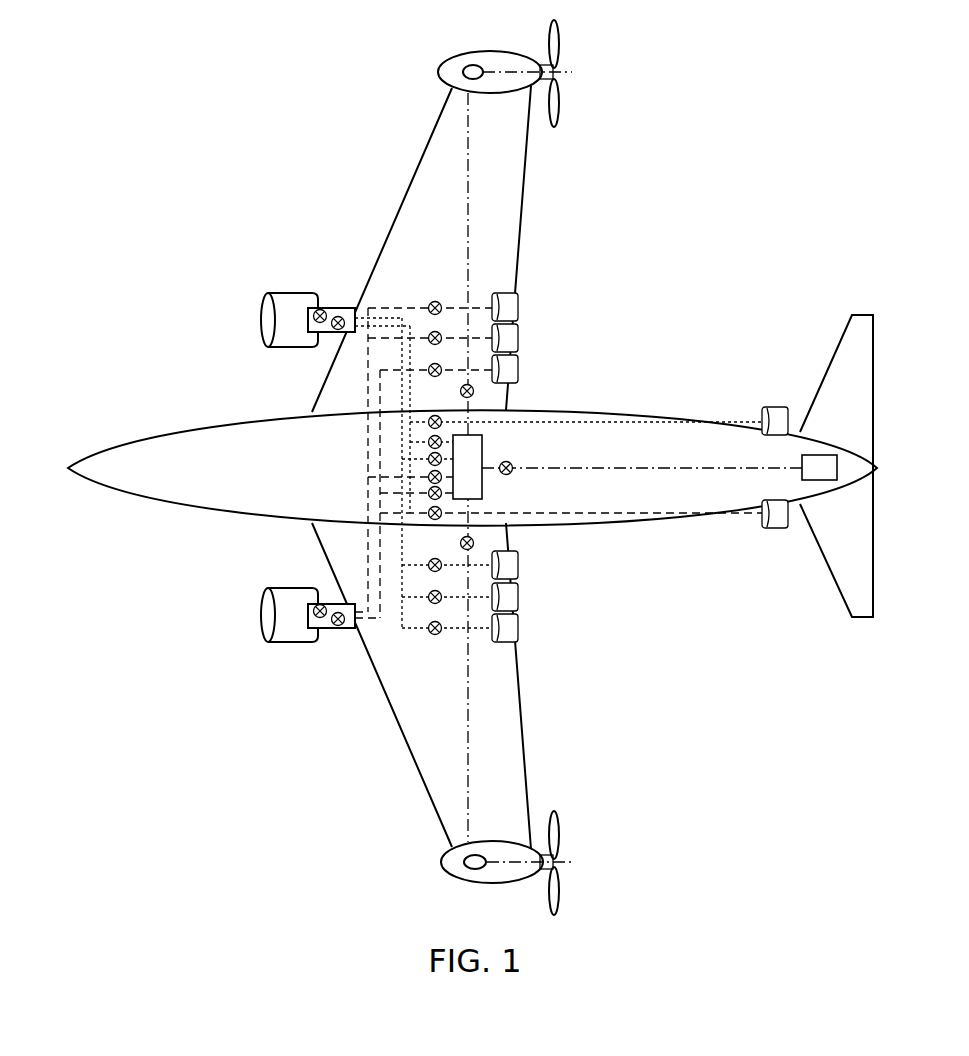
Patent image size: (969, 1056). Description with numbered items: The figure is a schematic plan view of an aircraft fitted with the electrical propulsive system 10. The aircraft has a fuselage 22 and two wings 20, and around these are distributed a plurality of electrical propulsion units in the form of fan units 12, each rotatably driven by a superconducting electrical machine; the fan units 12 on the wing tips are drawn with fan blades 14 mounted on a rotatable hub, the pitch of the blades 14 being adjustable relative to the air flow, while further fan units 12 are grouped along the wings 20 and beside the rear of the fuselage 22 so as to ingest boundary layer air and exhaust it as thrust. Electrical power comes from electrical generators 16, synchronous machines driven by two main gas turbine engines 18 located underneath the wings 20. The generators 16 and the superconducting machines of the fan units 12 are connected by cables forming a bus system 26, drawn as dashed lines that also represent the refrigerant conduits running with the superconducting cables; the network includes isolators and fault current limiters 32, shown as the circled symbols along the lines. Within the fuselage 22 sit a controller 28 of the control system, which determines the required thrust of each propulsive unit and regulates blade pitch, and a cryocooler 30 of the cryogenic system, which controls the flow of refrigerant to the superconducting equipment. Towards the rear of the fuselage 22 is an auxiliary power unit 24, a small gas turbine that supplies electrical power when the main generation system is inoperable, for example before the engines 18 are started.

The electrical propulsive system 10 is at (733, 53).
The fan unit 12 is at (589, 123).
The fan blade 14 is at (547, 35).
The electrical generator 16 is at (337, 308).
The gas turbine engine 18 is at (262, 322).
The wing 20 is at (433, 178).
The fuselage 22 is at (152, 480).
The auxiliary power unit 24 is at (820, 455).
The bus system 26 is at (343, 482).
The controller 28 is at (475, 478).
The cryocooler 30 is at (472, 452).
The isolators and fault current limiters 32 is at (441, 292).